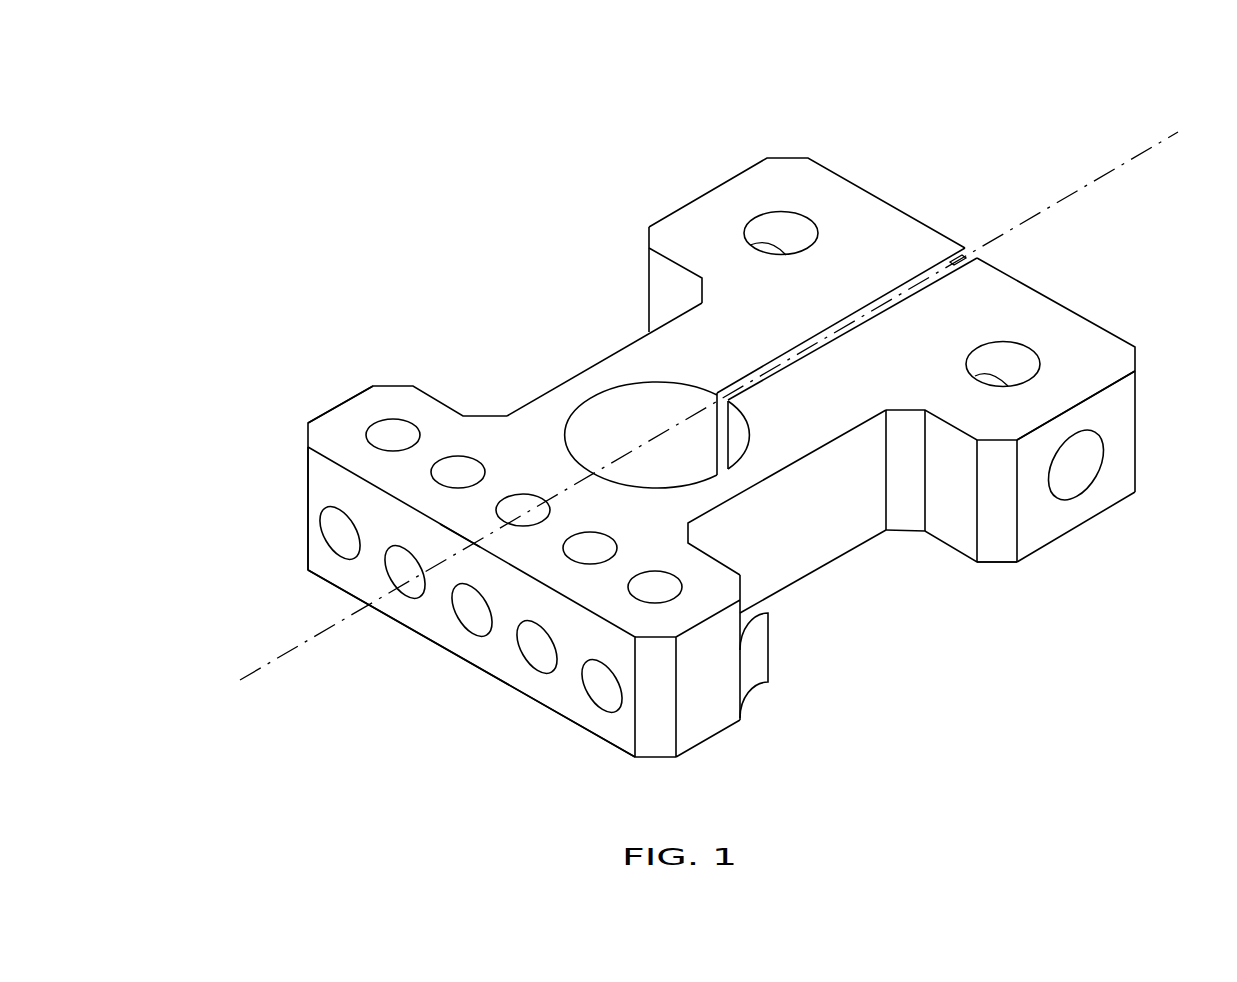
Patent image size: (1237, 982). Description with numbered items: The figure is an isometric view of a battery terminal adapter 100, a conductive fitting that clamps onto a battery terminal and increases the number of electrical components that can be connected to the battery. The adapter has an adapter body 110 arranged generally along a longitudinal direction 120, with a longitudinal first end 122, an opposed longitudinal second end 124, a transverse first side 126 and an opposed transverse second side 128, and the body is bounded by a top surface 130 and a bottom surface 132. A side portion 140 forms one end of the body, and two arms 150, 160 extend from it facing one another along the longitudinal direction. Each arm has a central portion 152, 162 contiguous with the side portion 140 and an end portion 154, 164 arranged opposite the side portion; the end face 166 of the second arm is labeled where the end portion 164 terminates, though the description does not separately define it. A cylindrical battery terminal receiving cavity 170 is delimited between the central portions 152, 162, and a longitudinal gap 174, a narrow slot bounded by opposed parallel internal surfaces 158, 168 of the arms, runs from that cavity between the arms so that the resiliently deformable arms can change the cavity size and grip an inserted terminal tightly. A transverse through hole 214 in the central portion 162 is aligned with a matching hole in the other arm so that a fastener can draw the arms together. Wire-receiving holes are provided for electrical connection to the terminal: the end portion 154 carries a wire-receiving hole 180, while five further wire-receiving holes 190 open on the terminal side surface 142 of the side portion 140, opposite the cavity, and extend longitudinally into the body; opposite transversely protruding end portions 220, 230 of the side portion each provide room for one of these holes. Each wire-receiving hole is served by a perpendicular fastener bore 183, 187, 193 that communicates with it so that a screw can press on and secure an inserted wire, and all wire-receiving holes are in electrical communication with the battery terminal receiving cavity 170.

The battery terminal adapter 100 is at (310, 224).
The adapter body 110 is at (352, 384).
The longitudinal direction 120 is at (1113, 160).
The longitudinal first end 122 is at (350, 694).
The longitudinal second end 124 is at (1093, 224).
The transverse first side 126 is at (520, 262).
The transverse second side 128 is at (917, 628).
The top surface 130 is at (1118, 360).
The bottom surface 132 is at (1075, 545).
The side portion 140 is at (473, 503).
The terminal side surface 142 is at (478, 647).
The arm 150 is at (632, 324).
The central portion 152 is at (625, 363).
The end portion 154 is at (728, 210).
The internal surface 158 is at (915, 278).
The arm 160 is at (781, 560).
The central portion 162 is at (812, 548).
The end portion 164 is at (1048, 545).
The end face 166 is at (1120, 465).
The internal surface 168 is at (955, 264).
The battery terminal receiving cavity 170 is at (616, 431).
The longitudinal gap 174 is at (934, 270).
The wire-receiving hole 180 is at (1073, 470).
The fastener bore 183 is at (1003, 360).
The fastener bore 187 is at (780, 236).
The wire-receiving holes 190 is at (340, 538).
The fastener bores 193 is at (395, 440).
The transverse through hole 214 is at (885, 530).
The protruding end portion 220 is at (333, 430).
The protruding end portion 230 is at (708, 702).